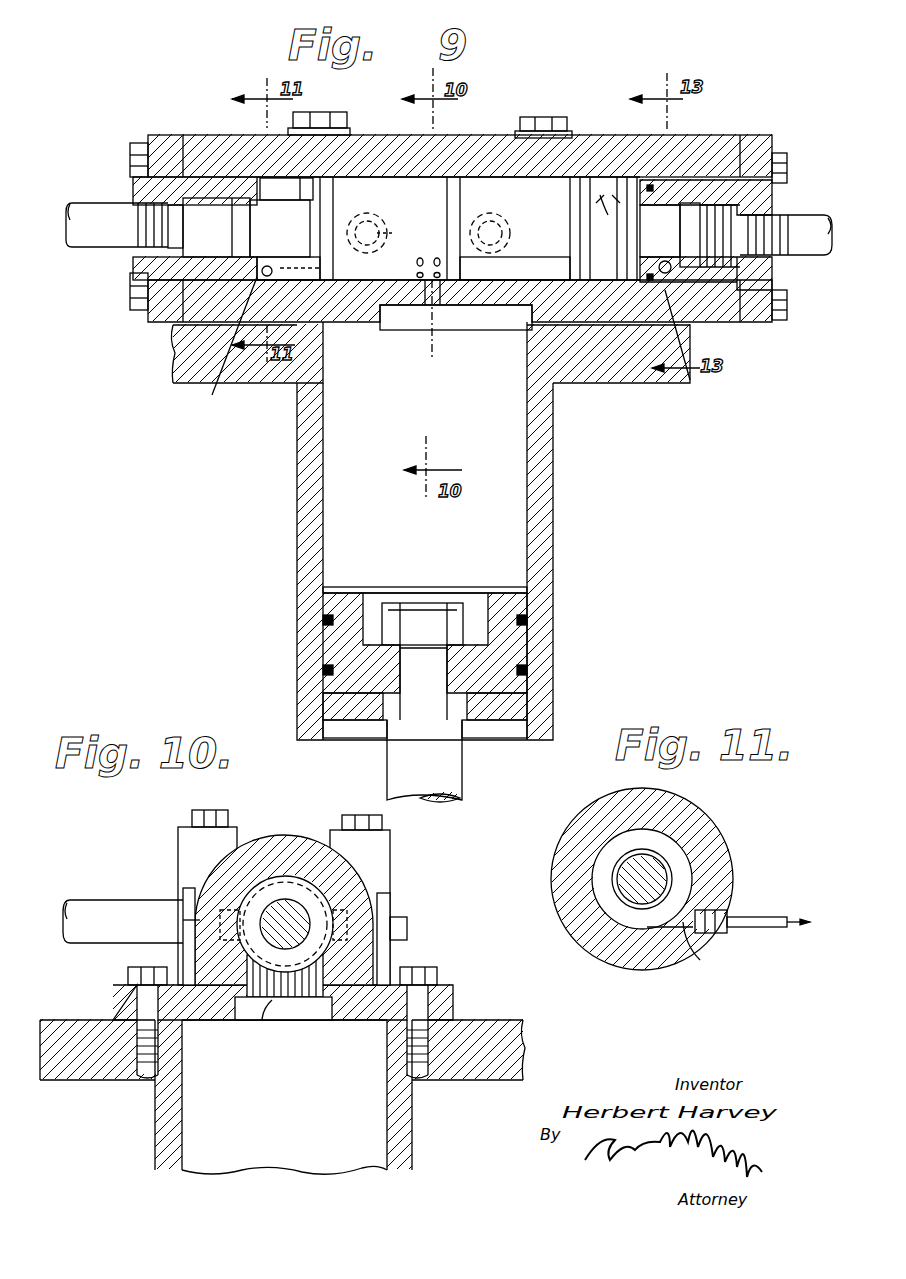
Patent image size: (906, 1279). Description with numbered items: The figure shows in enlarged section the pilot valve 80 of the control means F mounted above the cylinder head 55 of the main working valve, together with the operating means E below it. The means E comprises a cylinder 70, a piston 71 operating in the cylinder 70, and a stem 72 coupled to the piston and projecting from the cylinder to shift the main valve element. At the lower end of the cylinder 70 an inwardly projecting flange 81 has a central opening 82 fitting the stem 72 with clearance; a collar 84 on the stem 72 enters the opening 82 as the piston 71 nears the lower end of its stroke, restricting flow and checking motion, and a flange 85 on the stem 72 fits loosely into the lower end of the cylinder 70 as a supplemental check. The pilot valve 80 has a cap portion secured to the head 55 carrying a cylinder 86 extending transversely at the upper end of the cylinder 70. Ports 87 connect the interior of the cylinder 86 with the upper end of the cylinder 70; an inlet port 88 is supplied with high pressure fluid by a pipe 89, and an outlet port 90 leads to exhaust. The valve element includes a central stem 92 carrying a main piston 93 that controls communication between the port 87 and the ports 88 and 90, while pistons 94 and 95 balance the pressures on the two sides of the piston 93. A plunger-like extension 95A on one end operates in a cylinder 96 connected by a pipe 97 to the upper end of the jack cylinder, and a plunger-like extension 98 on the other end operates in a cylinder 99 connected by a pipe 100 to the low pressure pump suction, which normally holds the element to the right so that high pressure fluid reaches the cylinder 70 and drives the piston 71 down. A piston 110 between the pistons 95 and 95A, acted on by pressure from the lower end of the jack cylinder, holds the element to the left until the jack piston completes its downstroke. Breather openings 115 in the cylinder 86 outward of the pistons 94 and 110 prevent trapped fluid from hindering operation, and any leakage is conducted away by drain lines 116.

In FIG. 9, the cylinder head 55 is at (692, 378).
In FIG. 10, the cylinder head 55 is at (528, 1022).
In FIG. 9, the cylinder 70 is at (296, 526).
In FIG. 10, the cylinder 70 is at (154, 1144).
In FIG. 9, the piston 71 is at (480, 587).
In FIG. 9, the stem 72 is at (450, 776).
In FIG. 9, the pilot valve 80 is at (723, 140).
In FIG. 10, the pilot valve 80 is at (193, 857).
In FIG. 11, the pilot valve 80 is at (730, 848).
In FIG. 9, the inwardly projecting flange 81 is at (346, 712).
In FIG. 9, the central opening 82 is at (462, 700).
In FIG. 9, the collar 84 is at (386, 707).
In FIG. 10, the flange 85 is at (455, 1000).
In FIG. 9, the cylinder 86 is at (460, 141).
In FIG. 10, the cylinder 86 is at (347, 880).
In FIG. 11, the cylinder 86 is at (680, 878).
In FIG. 9, the ports 87 is at (425, 293).
In FIG. 10, the ports 87 is at (272, 1000).
In FIG. 9, the inlet port 88 is at (383, 233).
In FIG. 10, the pipe 89 is at (128, 887).
In FIG. 9, the outlet port 90 is at (505, 234).
In FIG. 10, the outlet port 90 is at (196, 925).
In FIG. 9, the stem 92 is at (405, 211).
In FIG. 10, the stem 92 is at (300, 905).
In FIG. 9, the main piston 93 is at (478, 193).
In FIG. 9, the piston 94 is at (340, 270).
In FIG. 9, the piston 95 is at (570, 273).
In FIG. 9, the plunger-like extension 95A is at (687, 207).
In FIG. 9, the cylinder 96 is at (682, 303).
In FIG. 9, the pipe 97 is at (807, 218).
In FIG. 9, the plunger-like extension 98 is at (287, 200).
In FIG. 11, the plunger-like extension 98 is at (648, 850).
In FIG. 9, the cylinder 99 is at (226, 254).
In FIG. 11, the cylinder 99 is at (615, 886).
In FIG. 9, the pipe 100 is at (93, 248).
In FIG. 9, the piston 110 is at (627, 183).
In FIG. 9, the breather openings 115 is at (461, 348).
In FIG. 11, the breather openings 115 is at (688, 960).
In FIG. 11, the drain lines 116 is at (752, 930).
In FIG. 9, the means E is at (556, 578).
In FIG. 10, the means E is at (414, 1140).
In FIG. 9, the control means F is at (589, 133).
In FIG. 10, the control means F is at (287, 828).
In FIG. 11, the control means F is at (734, 824).